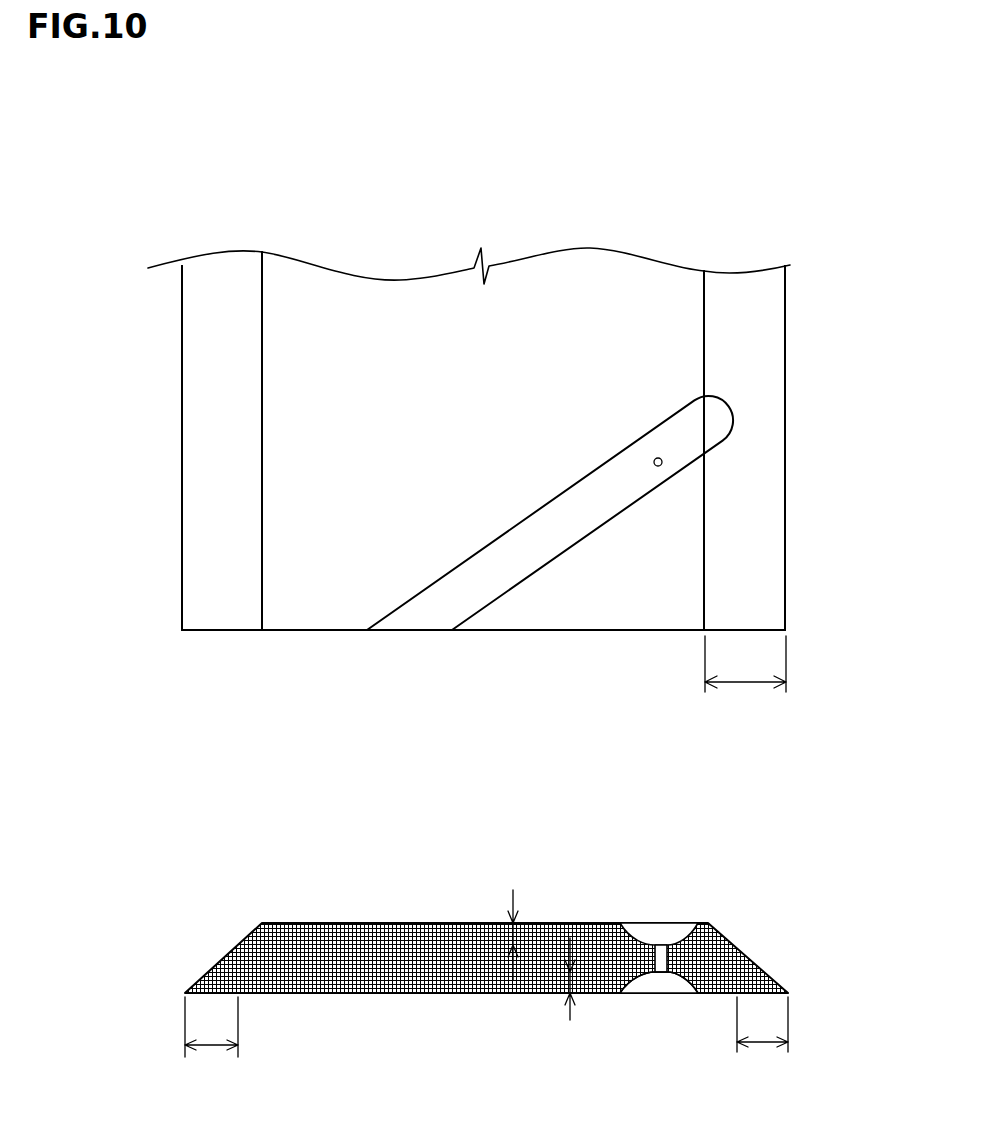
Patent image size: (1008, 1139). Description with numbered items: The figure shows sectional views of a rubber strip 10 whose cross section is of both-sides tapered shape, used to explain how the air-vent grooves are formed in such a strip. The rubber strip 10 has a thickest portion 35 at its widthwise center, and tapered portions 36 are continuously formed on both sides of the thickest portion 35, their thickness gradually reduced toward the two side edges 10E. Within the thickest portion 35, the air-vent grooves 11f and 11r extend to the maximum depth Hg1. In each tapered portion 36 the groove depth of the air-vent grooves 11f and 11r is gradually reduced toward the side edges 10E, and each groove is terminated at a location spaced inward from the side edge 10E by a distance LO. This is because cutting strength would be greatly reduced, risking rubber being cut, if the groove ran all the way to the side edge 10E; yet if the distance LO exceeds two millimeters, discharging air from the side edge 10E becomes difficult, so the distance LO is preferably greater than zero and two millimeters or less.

The rubber strip 10 is at (800, 362).
The side edge 10E is at (182, 473).
The thickest portion 35 is at (700, 237).
The tapered portion 36 is at (262, 238).
The air-vent groove 11f is at (658, 945).
The air-vent groove 11r is at (662, 972).
The maximum depth Hg1 is at (510, 938).
The distance LO is at (486, 857).